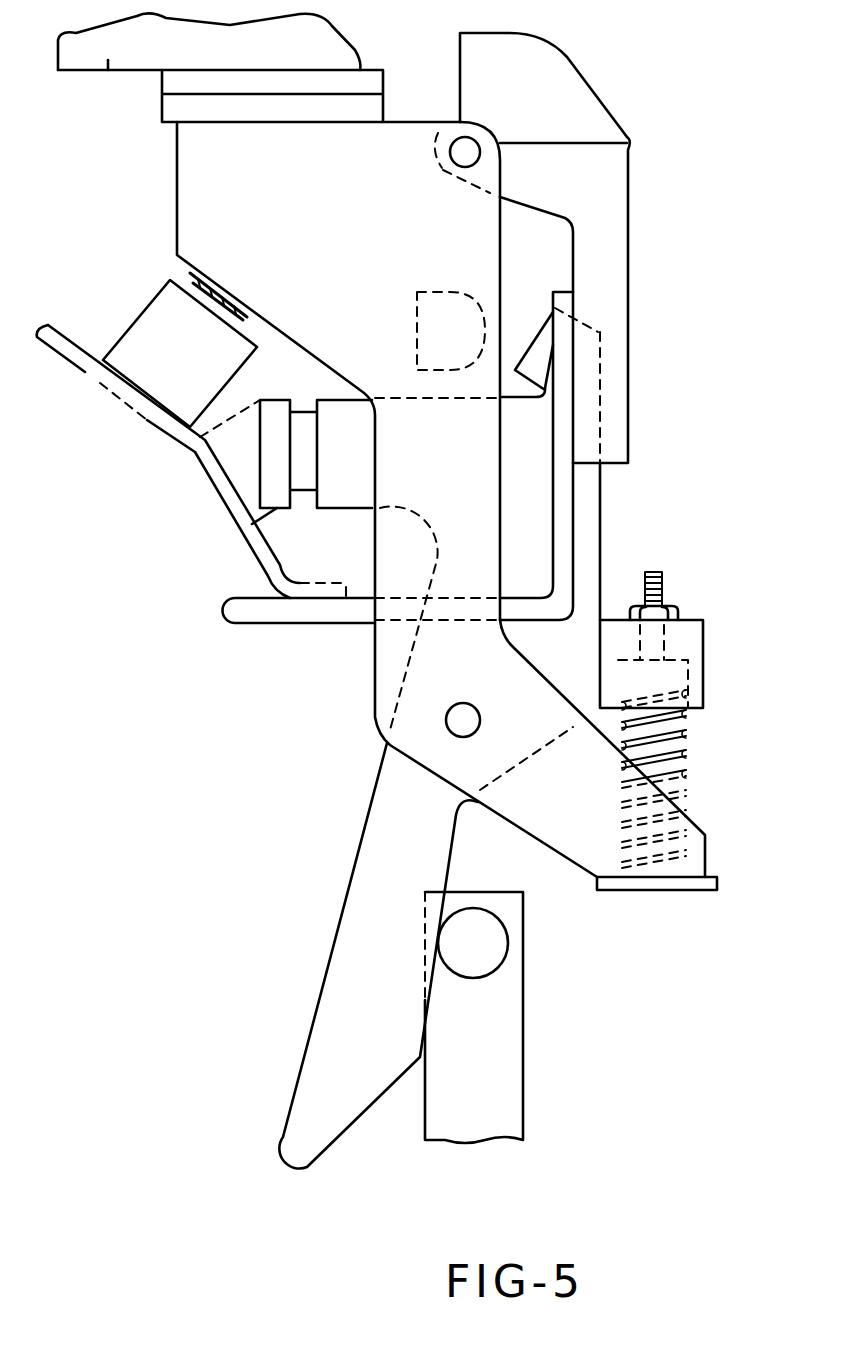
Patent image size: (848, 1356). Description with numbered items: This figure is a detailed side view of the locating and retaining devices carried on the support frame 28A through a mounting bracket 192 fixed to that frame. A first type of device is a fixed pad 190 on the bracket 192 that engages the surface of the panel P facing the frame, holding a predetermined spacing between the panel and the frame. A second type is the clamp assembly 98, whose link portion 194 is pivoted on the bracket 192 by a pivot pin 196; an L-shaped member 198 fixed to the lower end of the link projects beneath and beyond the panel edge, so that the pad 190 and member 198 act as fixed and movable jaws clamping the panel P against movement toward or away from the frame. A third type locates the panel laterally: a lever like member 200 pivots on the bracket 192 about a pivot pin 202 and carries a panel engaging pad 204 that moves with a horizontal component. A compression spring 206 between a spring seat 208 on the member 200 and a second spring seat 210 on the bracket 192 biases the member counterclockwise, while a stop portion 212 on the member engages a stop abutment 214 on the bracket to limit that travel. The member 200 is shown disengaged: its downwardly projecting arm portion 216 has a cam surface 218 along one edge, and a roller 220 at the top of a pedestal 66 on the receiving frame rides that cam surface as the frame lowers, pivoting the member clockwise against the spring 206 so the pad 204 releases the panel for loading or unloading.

The frame 28A is at (102, 72).
The mounting bracket 192 is at (320, 214).
The pivot pin 196 is at (453, 137).
The link portion 194 is at (573, 83).
The clamp assembly 98 is at (640, 247).
The L-shaped member 198 is at (565, 515).
The lever like member 200 is at (600, 548).
The stop portion 212 is at (518, 305).
The stop abutment 214 is at (430, 292).
The panel engaging pad 204 is at (277, 397).
The pad 190 is at (140, 310).
The panel P is at (197, 463).
The arm portion 216 is at (390, 1050).
The cam surface 218 is at (370, 1120).
The pivot pin 202 is at (445, 720).
The spring seat 208 is at (693, 640).
The compression spring 206 is at (687, 753).
The second spring seat 210 is at (687, 890).
The pedestal 66 is at (510, 1057).
The roller 220 is at (513, 943).